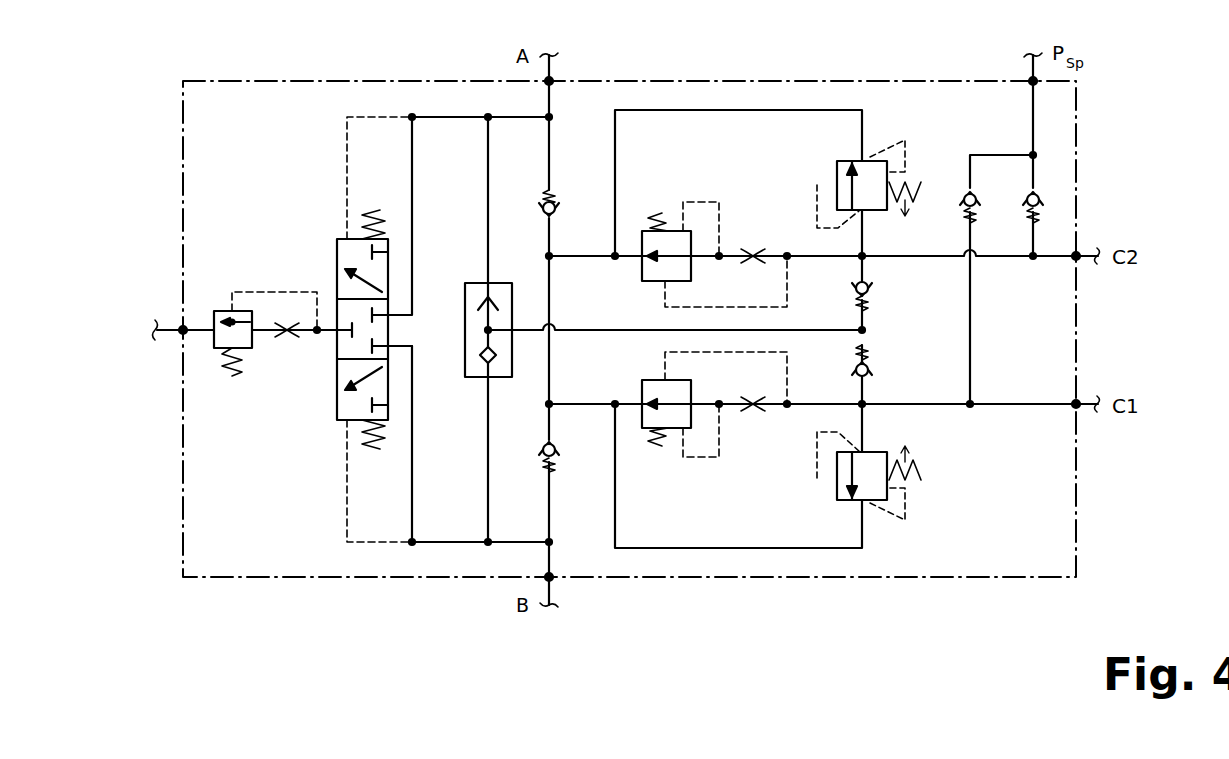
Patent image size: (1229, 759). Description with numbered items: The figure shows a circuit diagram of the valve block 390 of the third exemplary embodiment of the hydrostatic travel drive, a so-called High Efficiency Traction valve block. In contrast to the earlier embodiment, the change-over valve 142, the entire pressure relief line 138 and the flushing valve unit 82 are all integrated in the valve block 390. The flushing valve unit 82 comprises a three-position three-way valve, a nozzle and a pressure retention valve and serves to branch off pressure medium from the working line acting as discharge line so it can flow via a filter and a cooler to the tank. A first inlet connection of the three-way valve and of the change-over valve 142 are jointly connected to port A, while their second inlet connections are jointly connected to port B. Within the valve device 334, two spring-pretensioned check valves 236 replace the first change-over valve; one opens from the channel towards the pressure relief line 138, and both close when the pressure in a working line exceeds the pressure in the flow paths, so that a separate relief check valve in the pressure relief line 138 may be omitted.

The flushing valve unit 82 is at (285, 412).
The change-over valve 142 is at (475, 282).
The pressure relief line 138 is at (622, 330).
The check valve 236 is at (870, 286).
The valve device 334 is at (757, 385).
The valve block 390 is at (1078, 470).